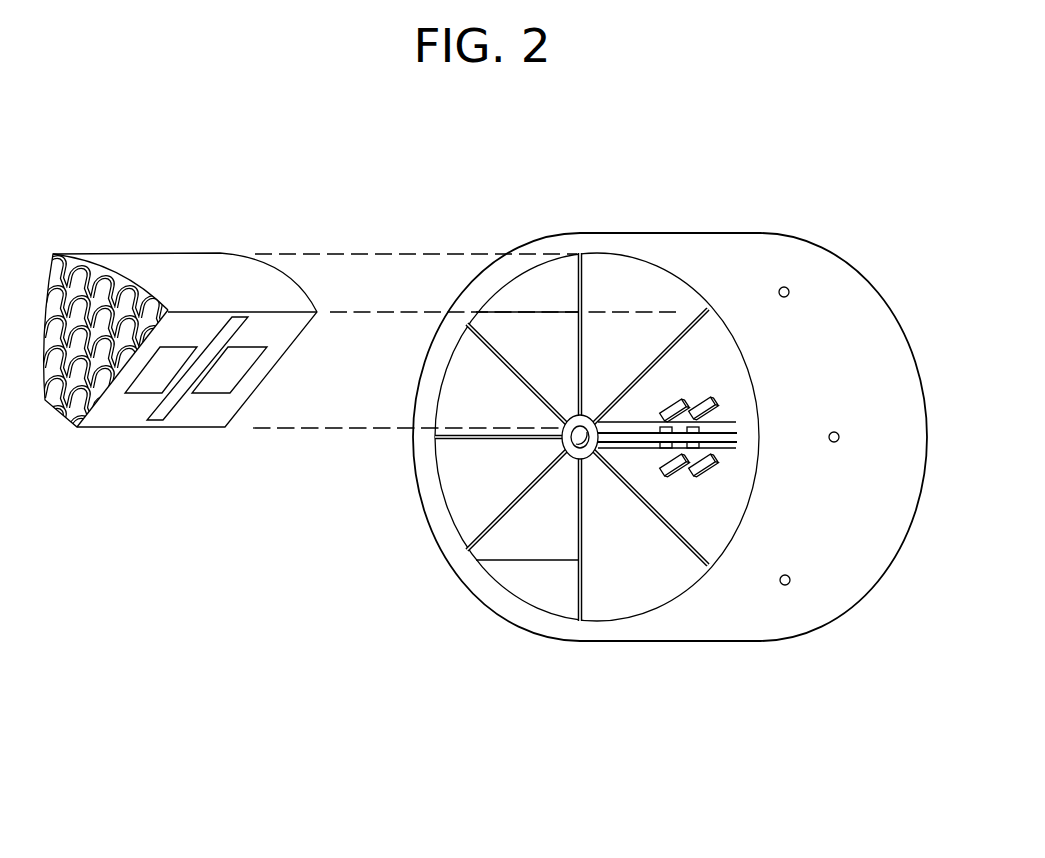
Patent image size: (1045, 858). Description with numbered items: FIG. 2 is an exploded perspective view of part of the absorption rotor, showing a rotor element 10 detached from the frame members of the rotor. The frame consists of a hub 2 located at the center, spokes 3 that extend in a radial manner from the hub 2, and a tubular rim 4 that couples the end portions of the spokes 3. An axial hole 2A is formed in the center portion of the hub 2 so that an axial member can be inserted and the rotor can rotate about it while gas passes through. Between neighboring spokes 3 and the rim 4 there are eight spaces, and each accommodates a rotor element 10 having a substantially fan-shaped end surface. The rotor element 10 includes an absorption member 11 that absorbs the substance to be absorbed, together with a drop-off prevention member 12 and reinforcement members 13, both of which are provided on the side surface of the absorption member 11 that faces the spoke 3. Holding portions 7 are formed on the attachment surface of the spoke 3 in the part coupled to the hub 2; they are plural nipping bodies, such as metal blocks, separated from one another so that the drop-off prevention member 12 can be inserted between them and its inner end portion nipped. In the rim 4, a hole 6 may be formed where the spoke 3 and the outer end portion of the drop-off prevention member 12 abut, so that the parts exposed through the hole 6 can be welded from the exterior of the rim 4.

The rotor element 10 is at (361, 324).
The absorption member 11 is at (105, 265).
The drop-off prevention member 12 is at (173, 397).
The reinforcement members 13 is at (148, 385).
The hub 2 is at (528, 477).
The axial hole 2A is at (598, 447).
The spokes 3 is at (587, 575).
The tubular rim 4 is at (587, 245).
The hole 6 is at (787, 587).
The holding portions 7 is at (732, 690).